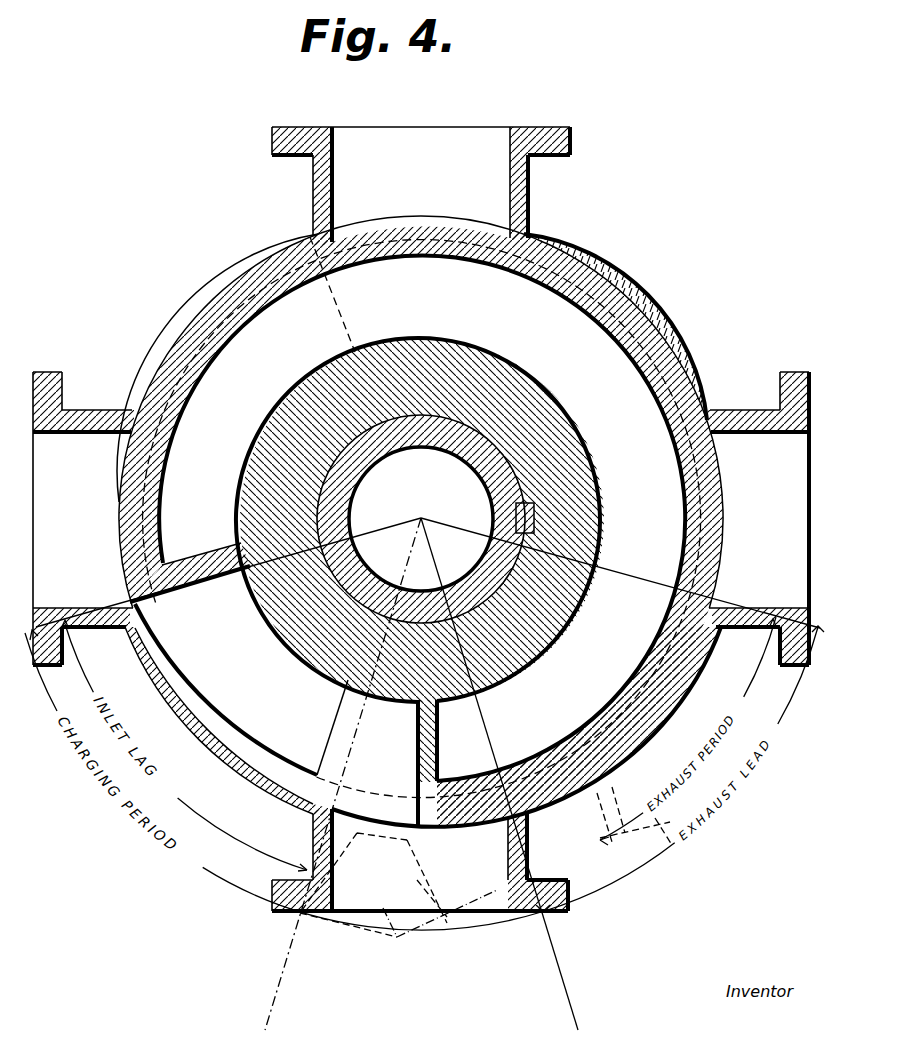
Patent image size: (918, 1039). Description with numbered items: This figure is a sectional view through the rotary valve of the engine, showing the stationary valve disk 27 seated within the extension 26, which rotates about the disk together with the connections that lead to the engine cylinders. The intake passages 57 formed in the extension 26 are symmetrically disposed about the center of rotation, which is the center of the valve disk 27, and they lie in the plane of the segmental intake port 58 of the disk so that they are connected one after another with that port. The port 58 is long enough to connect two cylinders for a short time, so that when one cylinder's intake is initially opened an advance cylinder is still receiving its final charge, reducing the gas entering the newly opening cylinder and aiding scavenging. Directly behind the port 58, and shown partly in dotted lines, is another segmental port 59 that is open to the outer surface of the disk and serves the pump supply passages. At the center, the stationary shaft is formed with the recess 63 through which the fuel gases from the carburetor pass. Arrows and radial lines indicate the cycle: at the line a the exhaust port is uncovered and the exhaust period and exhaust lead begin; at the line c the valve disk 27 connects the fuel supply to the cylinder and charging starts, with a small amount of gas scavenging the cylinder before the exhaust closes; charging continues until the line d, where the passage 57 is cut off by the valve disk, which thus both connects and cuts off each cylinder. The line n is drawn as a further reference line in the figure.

The intake passage 57 is at (421, 532).
The recess 63 is at (418, 582).
The segmental port 59 is at (208, 596).
The valve disk 27 is at (718, 545).
The extension 26 is at (644, 726).
The segmental intake port 58 is at (256, 726).
The radial line a is at (781, 607).
The line c is at (336, 778).
The line d is at (78, 606).
The reference line n is at (503, 778).